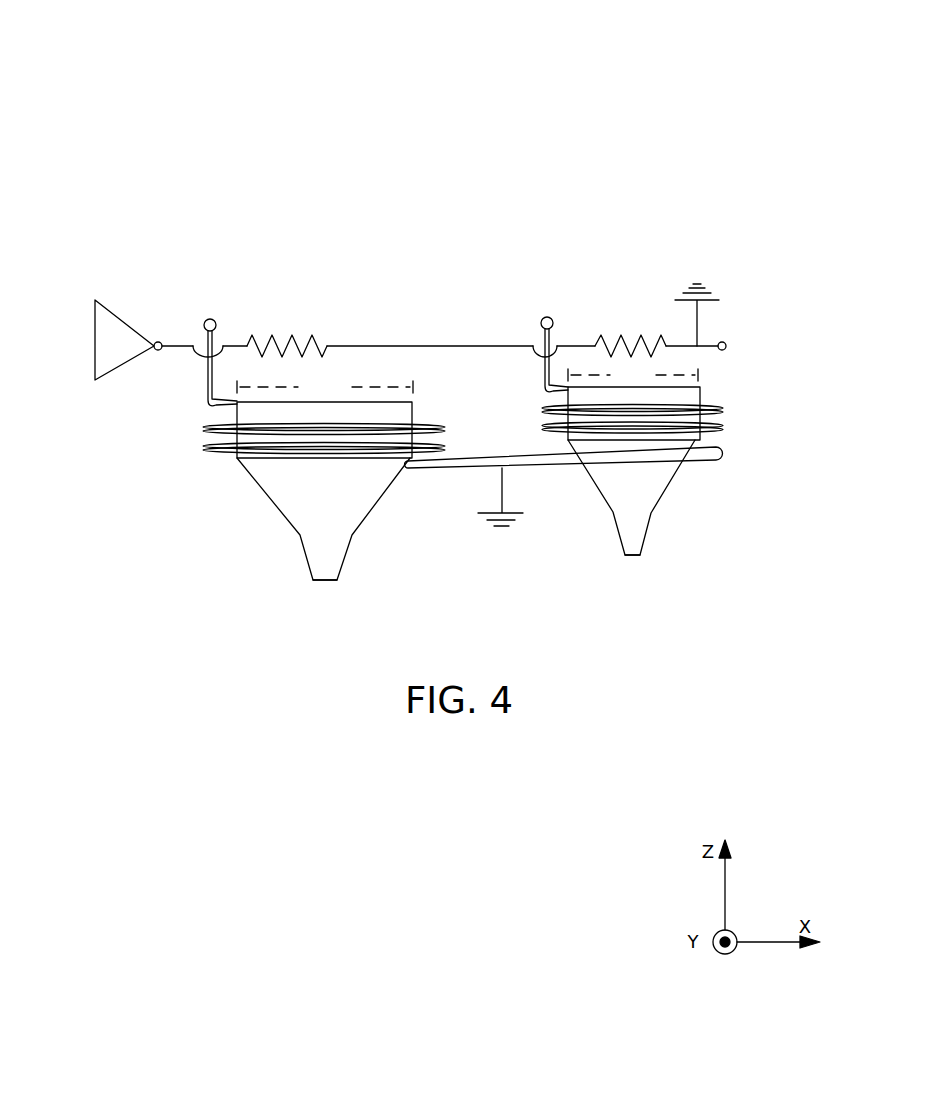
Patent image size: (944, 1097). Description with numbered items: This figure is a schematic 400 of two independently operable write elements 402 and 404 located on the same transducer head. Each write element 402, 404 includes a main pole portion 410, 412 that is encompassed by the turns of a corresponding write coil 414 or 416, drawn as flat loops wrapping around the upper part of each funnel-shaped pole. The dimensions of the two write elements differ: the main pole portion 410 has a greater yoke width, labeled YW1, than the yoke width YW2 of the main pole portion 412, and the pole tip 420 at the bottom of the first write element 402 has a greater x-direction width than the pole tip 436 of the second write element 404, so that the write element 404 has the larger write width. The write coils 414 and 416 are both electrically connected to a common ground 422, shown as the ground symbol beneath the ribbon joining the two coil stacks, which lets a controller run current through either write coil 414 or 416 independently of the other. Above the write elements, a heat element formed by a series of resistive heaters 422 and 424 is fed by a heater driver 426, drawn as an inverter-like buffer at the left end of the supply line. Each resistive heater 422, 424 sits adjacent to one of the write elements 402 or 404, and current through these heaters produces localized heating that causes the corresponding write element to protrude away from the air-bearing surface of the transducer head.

The schematic 400 is at (140, 77).
The write element 402 is at (422, 397).
The write element 404 is at (723, 382).
The main pole portion 410 is at (268, 500).
The main pole portion 412 is at (675, 478).
The write coil 414 is at (203, 429).
The write coil 416 is at (723, 430).
The pole tip 420 is at (328, 580).
The common ground / resistive heater 422 is at (274, 339).
The resistive heater 424 is at (601, 338).
The heater driver 426 is at (140, 332).
The pole tip 436 is at (632, 555).